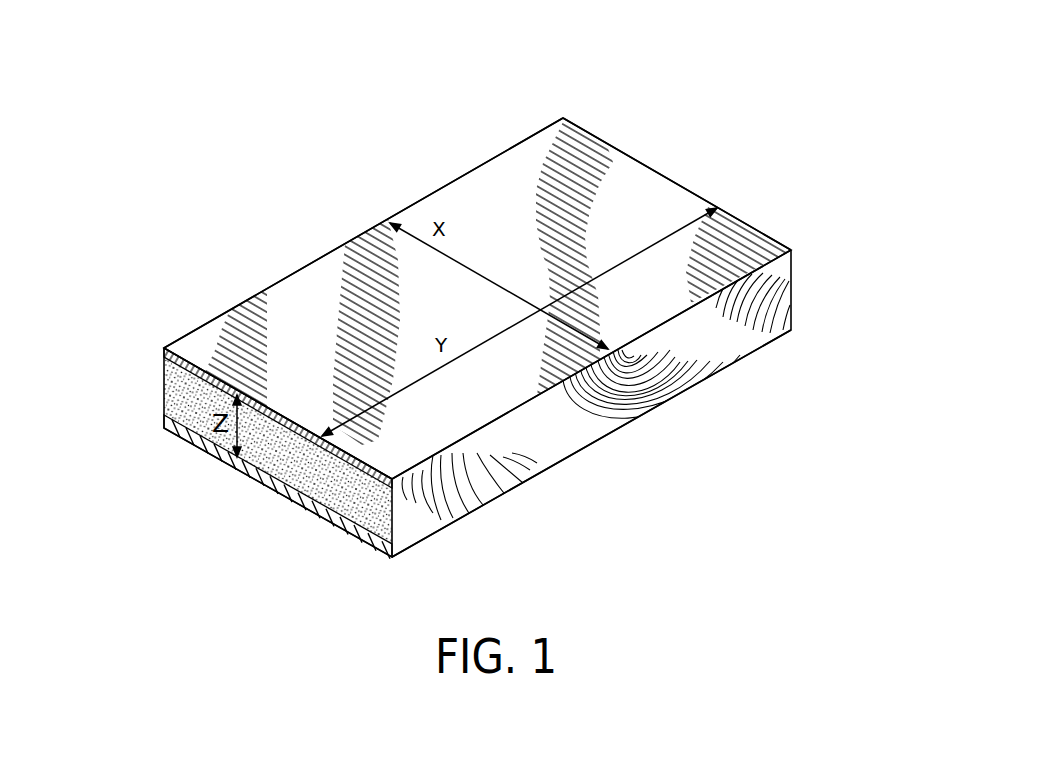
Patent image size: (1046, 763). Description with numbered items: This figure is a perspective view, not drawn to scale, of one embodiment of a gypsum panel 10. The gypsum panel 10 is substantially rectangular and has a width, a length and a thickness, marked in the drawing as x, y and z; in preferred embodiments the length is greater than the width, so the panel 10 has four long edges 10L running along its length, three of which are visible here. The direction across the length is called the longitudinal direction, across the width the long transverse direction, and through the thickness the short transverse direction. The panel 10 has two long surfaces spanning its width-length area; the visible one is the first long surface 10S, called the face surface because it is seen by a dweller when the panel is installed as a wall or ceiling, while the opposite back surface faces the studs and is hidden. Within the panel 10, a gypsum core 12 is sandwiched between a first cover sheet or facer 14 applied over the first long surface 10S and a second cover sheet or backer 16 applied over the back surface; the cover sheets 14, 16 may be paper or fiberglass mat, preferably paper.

The gypsum panel 10 is at (790, 173).
The long edges 10L is at (325, 257).
The first long surface 10S is at (338, 336).
The gypsum core 12 is at (164, 383).
The first cover sheet 14 is at (532, 153).
The second cover sheet 16 is at (173, 433).